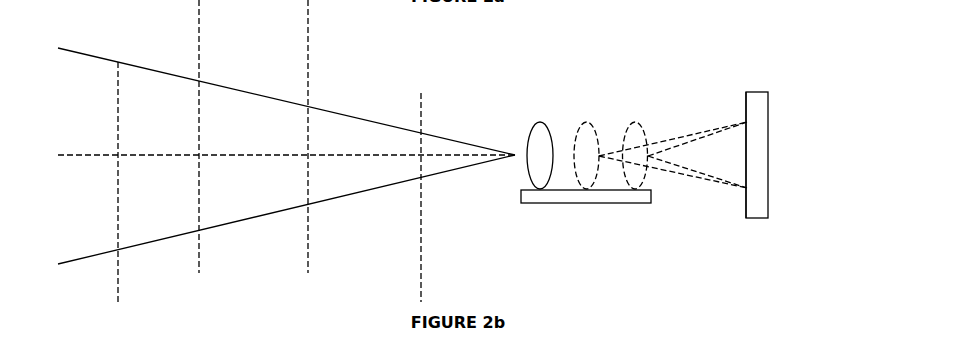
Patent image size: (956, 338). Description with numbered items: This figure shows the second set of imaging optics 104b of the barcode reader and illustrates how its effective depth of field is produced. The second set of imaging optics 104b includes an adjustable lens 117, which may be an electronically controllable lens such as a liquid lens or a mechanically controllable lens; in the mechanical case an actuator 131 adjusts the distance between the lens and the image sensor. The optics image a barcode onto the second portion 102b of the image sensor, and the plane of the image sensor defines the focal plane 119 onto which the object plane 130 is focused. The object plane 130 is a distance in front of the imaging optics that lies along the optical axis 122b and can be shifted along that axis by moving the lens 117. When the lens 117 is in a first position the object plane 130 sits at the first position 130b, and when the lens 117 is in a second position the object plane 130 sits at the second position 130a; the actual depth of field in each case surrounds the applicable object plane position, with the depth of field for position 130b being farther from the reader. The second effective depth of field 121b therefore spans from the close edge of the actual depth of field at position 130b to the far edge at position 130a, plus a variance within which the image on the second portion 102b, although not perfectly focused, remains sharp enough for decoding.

The second portion of the image sensor 102b is at (768, 135).
The second set of imaging optics 104b is at (586, 176).
The adjustable lens 117 is at (585, 122).
The focal plane 119 is at (746, 92).
The second effective depth of field 121b is at (118, 285).
The optical axis 122b is at (110, 155).
The object plane 130 is at (199, 259).
The second position of the object plane 130a is at (199, 17).
The first position of the object plane 130b is at (308, 55).
The actuator 131 is at (651, 193).